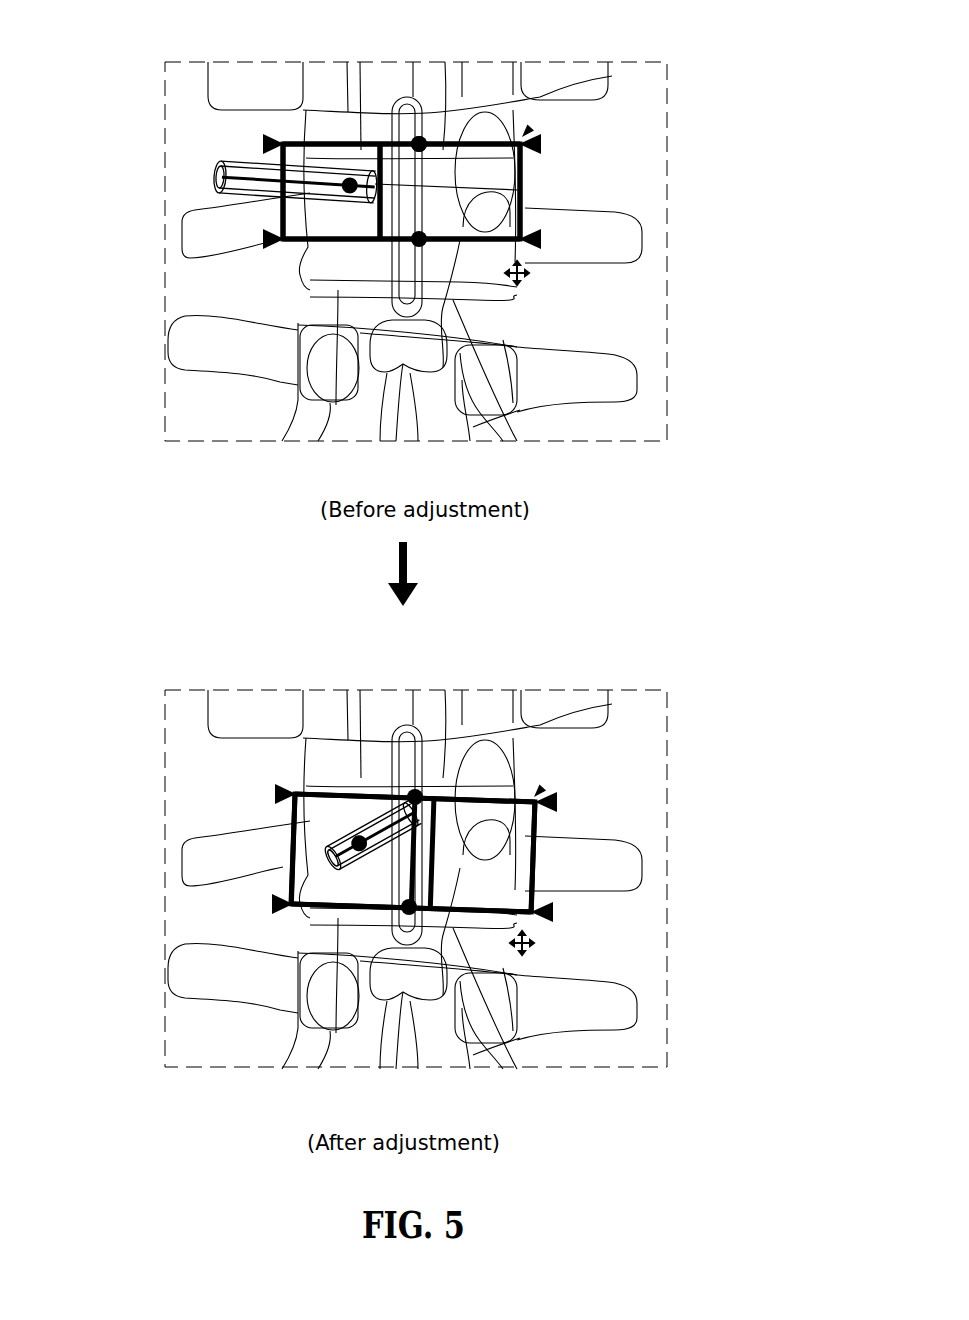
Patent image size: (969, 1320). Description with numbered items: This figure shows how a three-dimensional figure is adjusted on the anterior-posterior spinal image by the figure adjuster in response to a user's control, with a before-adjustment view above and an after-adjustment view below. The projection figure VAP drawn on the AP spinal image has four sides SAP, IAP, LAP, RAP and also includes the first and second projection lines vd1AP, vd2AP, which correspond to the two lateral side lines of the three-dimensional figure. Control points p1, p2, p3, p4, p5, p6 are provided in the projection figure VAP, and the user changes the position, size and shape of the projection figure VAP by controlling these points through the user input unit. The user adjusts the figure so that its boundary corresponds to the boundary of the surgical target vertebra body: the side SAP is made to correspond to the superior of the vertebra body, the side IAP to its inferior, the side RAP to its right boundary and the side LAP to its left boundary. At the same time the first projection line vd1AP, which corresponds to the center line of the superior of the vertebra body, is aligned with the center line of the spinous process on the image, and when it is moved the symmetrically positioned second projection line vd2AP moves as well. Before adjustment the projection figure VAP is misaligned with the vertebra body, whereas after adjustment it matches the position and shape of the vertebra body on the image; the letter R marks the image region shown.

The control point p1 is at (266, 143).
The control point p2 is at (266, 240).
The control point p3 is at (541, 240).
The control point p4 is at (541, 144).
The control point p5 is at (418, 136).
The control point p6 is at (466, 358).
The first projection line vd1AP is at (424, 136).
The second projection line vd2AP is at (378, 138).
The side SAP is at (524, 130).
The side IAP is at (315, 278).
The side LAP is at (283, 205).
The side RAP is at (522, 190).
The projection figure VAP is at (530, 127).
The region of interest R is at (458, 542).